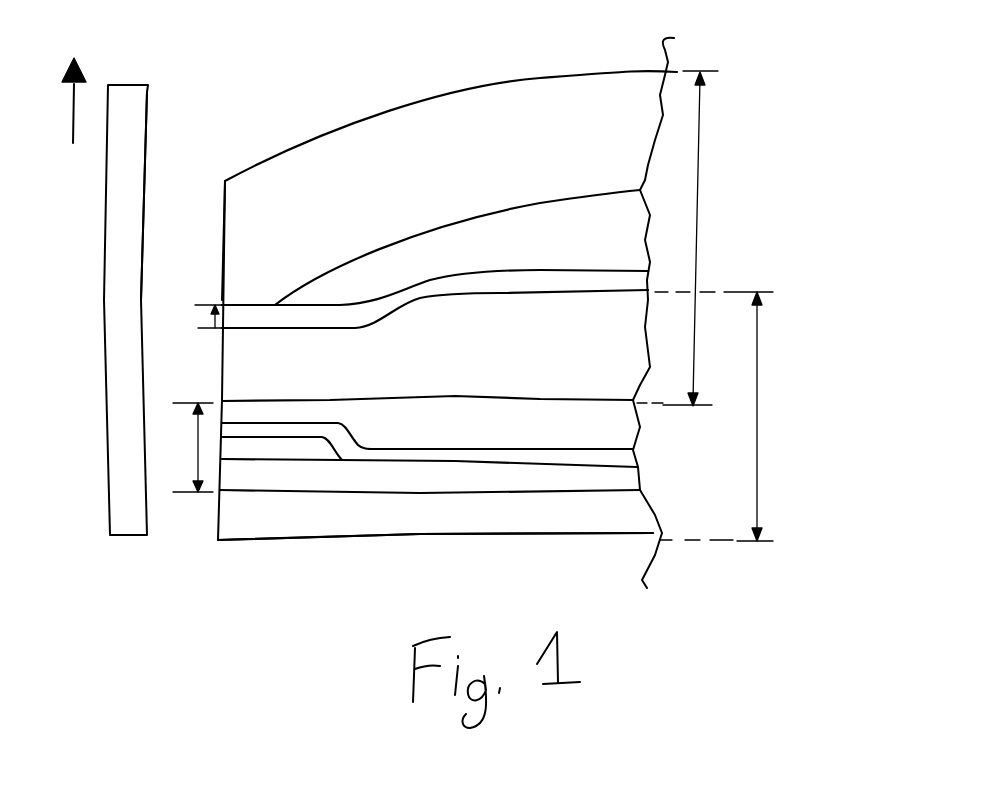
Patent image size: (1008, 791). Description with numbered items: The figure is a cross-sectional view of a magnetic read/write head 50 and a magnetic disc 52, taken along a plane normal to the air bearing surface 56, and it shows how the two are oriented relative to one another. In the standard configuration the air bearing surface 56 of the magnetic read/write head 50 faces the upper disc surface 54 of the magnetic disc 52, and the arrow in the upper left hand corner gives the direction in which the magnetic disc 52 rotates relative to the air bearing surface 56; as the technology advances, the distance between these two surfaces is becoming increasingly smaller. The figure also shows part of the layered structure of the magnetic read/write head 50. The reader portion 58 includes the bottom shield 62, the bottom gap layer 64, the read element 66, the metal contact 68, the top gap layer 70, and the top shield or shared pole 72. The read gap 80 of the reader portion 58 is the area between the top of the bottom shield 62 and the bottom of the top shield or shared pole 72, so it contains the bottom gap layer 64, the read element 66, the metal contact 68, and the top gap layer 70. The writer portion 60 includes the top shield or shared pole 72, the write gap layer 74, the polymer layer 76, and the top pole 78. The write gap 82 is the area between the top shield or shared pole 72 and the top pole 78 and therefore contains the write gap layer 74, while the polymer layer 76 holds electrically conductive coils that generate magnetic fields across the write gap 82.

The magnetic read/write head 50 is at (782, 44).
The magnetic disc 52 is at (120, 335).
The upper disc surface 54 is at (145, 140).
The air bearing surface 56 is at (218, 200).
The reader portion 58 is at (773, 409).
The writer portion 60 is at (712, 169).
The bottom shield 62 is at (435, 521).
The bottom gap layer 64 is at (430, 484).
The read element 66 is at (429, 454).
The metal contact 68 is at (282, 441).
The top gap layer 70 is at (427, 430).
The top shield or shared pole 72 is at (427, 372).
The write gap layer 74 is at (435, 303).
The polymer layer 76 is at (435, 270).
The top pole 78 is at (457, 222).
The read gap 80 is at (192, 447).
The write gap 82 is at (197, 317).